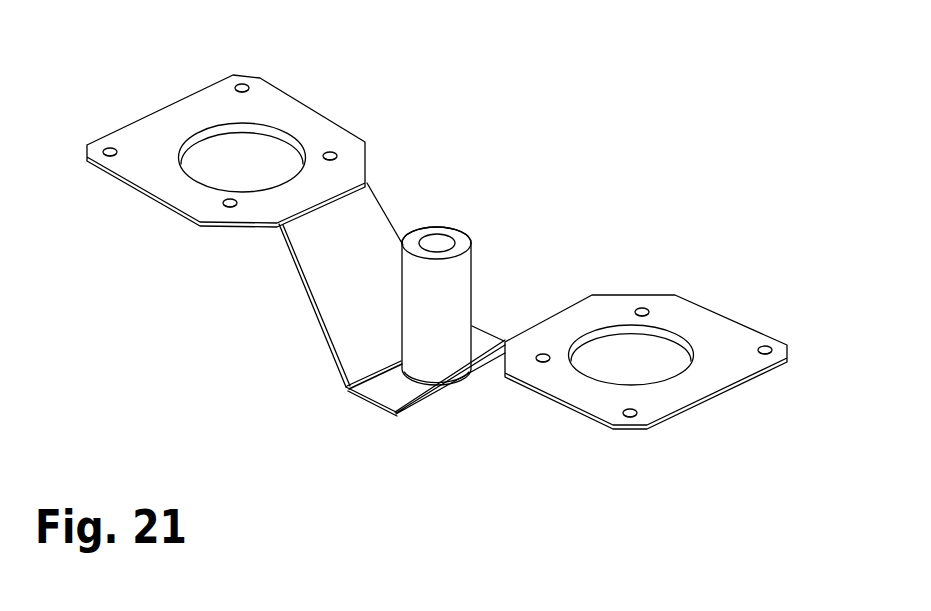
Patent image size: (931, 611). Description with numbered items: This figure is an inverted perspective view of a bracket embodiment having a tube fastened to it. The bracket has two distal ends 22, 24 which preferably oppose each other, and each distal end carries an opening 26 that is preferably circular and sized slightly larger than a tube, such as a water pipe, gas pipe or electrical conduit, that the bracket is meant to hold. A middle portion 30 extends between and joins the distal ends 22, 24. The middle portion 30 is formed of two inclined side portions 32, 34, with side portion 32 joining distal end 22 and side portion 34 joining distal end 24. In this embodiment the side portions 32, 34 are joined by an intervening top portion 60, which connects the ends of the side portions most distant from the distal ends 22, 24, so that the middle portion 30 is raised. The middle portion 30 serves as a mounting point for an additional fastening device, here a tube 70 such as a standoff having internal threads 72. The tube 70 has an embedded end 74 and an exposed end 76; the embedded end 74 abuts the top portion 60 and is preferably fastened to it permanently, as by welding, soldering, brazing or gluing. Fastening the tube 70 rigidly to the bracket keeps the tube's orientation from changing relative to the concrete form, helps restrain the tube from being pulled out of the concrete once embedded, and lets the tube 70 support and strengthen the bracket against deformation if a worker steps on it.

The distal end 22 is at (688, 383).
The distal end 24 is at (210, 108).
The opening 26 is at (245, 157).
The middle portion 30 is at (375, 326).
The side portion 32 is at (465, 372).
The side portion 34 is at (303, 290).
The top portion 60 is at (375, 403).
The tube 70 is at (453, 289).
The internal threads 72 is at (437, 240).
The embedded end 74 is at (412, 380).
The exposed end 76 is at (465, 233).